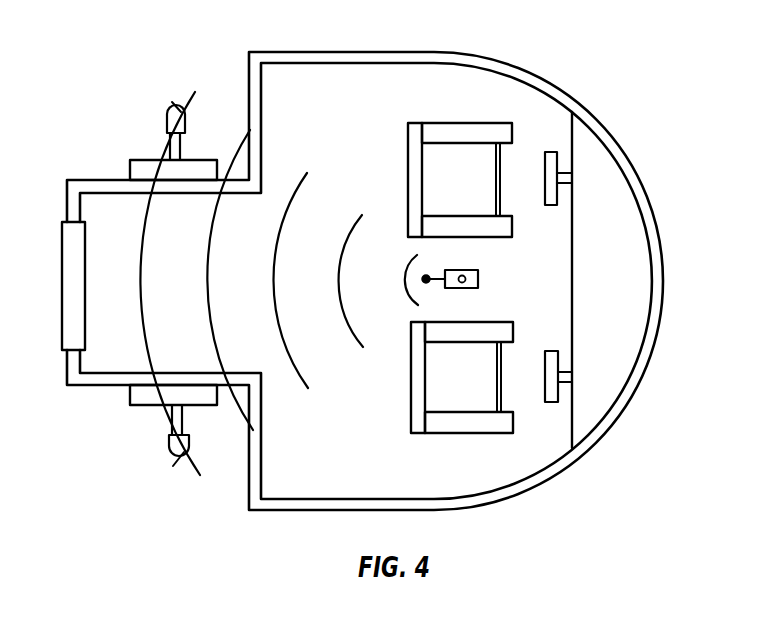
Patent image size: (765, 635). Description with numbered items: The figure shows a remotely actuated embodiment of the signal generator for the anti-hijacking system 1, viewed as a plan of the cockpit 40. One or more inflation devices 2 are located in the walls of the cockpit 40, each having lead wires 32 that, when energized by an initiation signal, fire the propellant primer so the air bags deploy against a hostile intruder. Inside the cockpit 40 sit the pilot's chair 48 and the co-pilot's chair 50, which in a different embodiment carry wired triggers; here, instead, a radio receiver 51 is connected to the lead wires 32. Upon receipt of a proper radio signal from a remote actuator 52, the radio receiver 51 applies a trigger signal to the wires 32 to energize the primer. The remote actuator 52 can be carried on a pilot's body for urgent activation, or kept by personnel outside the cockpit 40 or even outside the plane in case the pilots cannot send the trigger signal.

The anti-hijacking system 1 is at (605, 66).
The inflation device 2 is at (138, 160).
The lead wires 32 is at (182, 142).
The cockpit 40 is at (380, 289).
The pilot's chair 48 is at (476, 391).
The co-pilot's chair 50 is at (474, 192).
The radio receiver 51 is at (160, 100).
The remote actuator 52 is at (478, 278).